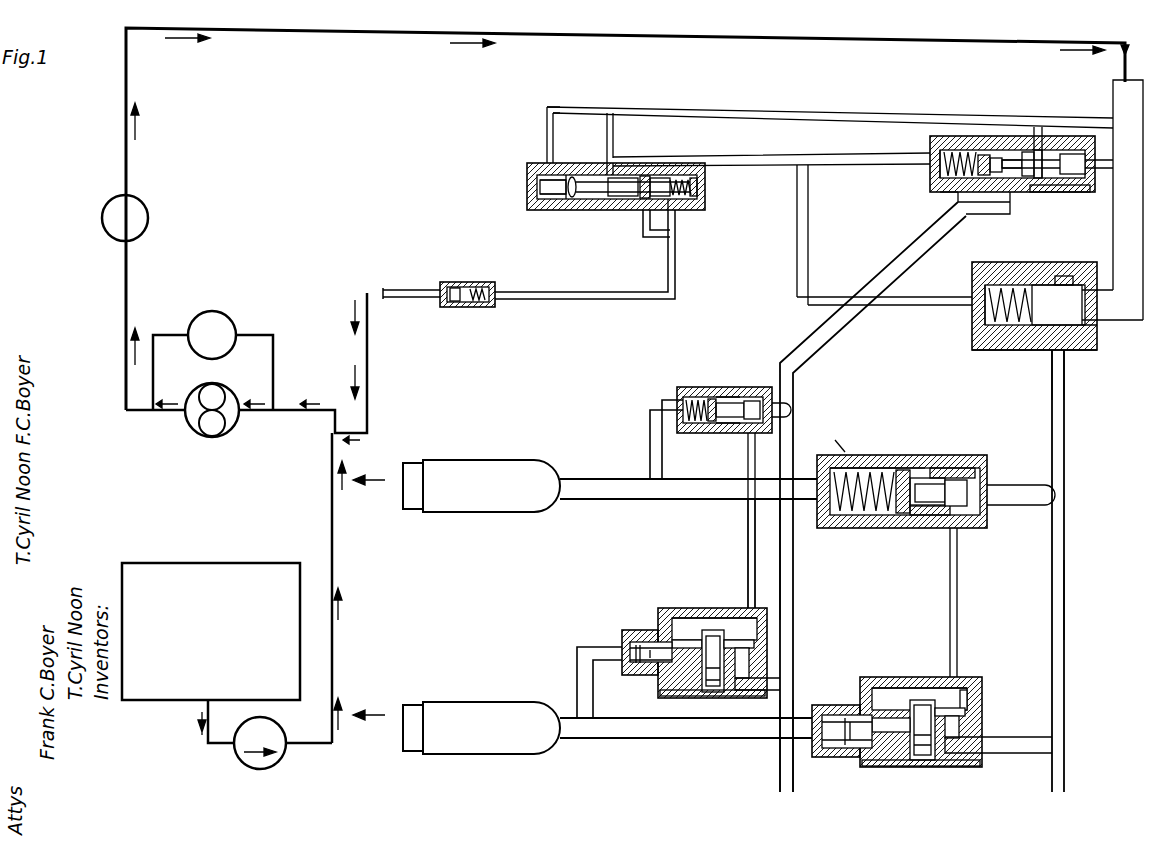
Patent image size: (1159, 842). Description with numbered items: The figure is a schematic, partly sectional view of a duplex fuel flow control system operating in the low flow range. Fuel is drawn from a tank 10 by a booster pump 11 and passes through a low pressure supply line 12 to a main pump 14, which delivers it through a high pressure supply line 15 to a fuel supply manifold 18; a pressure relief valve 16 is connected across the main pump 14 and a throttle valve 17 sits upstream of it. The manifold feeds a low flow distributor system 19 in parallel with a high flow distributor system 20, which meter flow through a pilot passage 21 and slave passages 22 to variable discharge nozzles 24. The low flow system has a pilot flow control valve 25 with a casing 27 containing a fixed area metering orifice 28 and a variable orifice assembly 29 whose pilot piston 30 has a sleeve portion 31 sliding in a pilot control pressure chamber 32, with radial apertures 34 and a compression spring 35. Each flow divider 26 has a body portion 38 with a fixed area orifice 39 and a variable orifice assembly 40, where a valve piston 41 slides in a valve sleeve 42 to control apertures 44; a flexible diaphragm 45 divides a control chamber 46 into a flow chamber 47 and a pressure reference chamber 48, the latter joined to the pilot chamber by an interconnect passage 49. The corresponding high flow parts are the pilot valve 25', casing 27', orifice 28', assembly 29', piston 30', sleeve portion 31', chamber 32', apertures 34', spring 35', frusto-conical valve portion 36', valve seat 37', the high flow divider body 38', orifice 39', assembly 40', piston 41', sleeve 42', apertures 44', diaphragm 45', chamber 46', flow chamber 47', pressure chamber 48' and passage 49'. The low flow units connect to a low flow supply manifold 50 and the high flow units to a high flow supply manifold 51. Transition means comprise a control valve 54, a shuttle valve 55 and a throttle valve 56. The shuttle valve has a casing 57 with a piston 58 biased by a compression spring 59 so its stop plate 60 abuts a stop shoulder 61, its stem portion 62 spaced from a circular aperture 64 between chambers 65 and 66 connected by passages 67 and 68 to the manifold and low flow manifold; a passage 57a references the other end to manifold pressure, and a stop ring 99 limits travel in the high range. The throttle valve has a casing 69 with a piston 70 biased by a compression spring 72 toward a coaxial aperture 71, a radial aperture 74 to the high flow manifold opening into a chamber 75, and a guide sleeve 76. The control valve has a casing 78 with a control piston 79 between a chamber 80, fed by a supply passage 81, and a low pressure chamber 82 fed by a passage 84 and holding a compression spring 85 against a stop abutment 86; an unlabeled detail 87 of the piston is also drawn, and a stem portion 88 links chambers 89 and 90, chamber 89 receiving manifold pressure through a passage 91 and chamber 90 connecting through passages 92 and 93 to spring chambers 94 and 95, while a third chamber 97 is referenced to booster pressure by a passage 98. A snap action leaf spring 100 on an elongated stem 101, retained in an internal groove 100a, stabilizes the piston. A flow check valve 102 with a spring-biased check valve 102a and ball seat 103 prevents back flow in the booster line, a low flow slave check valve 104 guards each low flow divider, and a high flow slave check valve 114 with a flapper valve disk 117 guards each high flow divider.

The tank 10 is at (212, 572).
The booster pump 11 is at (286, 765).
The low pressure supply line 12 is at (342, 552).
The main pump 14 is at (186, 420).
The high pressure supply line 15 is at (128, 280).
The pressure relief valve 16 is at (216, 312).
The throttle valve 17 is at (150, 205).
The fuel supply manifold 18 is at (1140, 196).
The low flow metering or distributor system 19 is at (840, 440).
The high flow metering or distributor system 20 is at (1075, 480).
The pilot passage 21 is at (592, 476).
The slave passages 22 is at (566, 700).
The variable discharge nozzles 24 is at (492, 470).
The pilot flow control valve 25 is at (737, 471).
The pilot flow control valve 25' is at (936, 527).
The flow divider 26 is at (718, 710).
The body or casing 27 is at (676, 384).
The body or casing 27' is at (911, 462).
The fixed area metering orifice 28 is at (799, 402).
The fixed area metering orifice 28' is at (1020, 473).
The variable orifice assembly 29 is at (730, 434).
The variable orifice assembly 29' is at (915, 446).
The pilot plunger or piston 30 is at (710, 377).
The pilot plunger or piston 30' is at (880, 515).
The sleeve portion 31 is at (730, 388).
The sleeve portion 31' is at (952, 446).
The pilot control pressure chamber or passage 32 is at (786, 391).
The pilot control pressure chamber or passage 32' is at (979, 520).
The radial apertures 34 is at (738, 520).
The radial apertures 34' is at (922, 465).
The compression spring 35 is at (671, 439).
The compression spring 35' is at (861, 445).
The frusto-conical valve portion 36' is at (925, 522).
The frusto-conical valve seat 37' is at (908, 438).
The body portion 38 is at (696, 731).
The body portion 38' is at (921, 781).
The fixed area orifice 39 is at (783, 674).
The fixed area orifice 39' is at (998, 755).
The variable orifice assembly 40 is at (711, 627).
The variable orifice assembly 40' is at (917, 702).
The pressure balanced valve plunger or piston 41 is at (694, 632).
The pressure balanced valve plunger or piston 41' is at (946, 749).
The valve sleeve 42 is at (653, 625).
The valve sleeve 42' is at (880, 756).
The apertures 44 is at (715, 667).
The apertures 44' is at (919, 666).
The flexible diaphragm 45 is at (681, 597).
The flexible diaphragm 45' is at (934, 661).
The control chamber 46 is at (778, 633).
The control chamber 46' is at (983, 700).
The flow chamber 47 is at (783, 658).
The flow chamber 47' is at (984, 721).
The pressure reference chamber 48 is at (714, 606).
The pressure reference chamber 48' is at (993, 680).
The interconnect passage 49 is at (721, 553).
The interconnect passage 49' is at (982, 602).
The low flow fluid supply manifold 50 is at (793, 566).
The high flow fluid supply manifold 51 is at (1066, 600).
The control valve 54 is at (718, 202).
The shuttle valve 55 is at (1060, 206).
The throttle valve 56 is at (1065, 365).
The casing 57 is at (1085, 140).
The passage 57a is at (1090, 180).
The plunger or piston 58 is at (1050, 178).
The compression spring 59 is at (948, 150).
The stop plate 60 is at (978, 180).
The stop shoulder 61 is at (992, 180).
The reduced diameter central stem portion 62 is at (1010, 180).
The circular aperture 64 is at (1025, 148).
The chamber 65 is at (1042, 135).
The chamber 66 is at (1030, 150).
The passage 67 is at (1075, 115).
The passage 68 is at (808, 250).
The casing 69 is at (978, 348).
The plunger or piston 70 is at (1080, 350).
The coaxial aperture 71 is at (1085, 312).
The compression spring 72 is at (985, 300).
The radial aperture 74 is at (1075, 398).
The chamber 75 is at (1050, 360).
The guide sleeve 76 is at (1066, 285).
The casing 78 is at (700, 186).
The control plunger or piston 79 is at (598, 200).
The coaxial chamber 80 is at (540, 190).
The supply passage 81 is at (547, 130).
The chamber 82 is at (680, 200).
The passage 84 is at (680, 282).
The compression spring 85 is at (690, 176).
The stop abutment 86 is at (592, 150).
The piston 87 is at (672, 176).
The reduced diameter central stem portion 88 is at (622, 200).
The coaxial chamber 89 is at (570, 176).
The coaxial chamber 90 is at (626, 176).
The passage 91 is at (610, 110).
The passage 92 is at (892, 156).
The passage 93 is at (885, 310).
The chamber 94 is at (960, 192).
The chamber 95 is at (990, 280).
The third coaxial chamber 97 is at (652, 178).
The passage 98 is at (662, 245).
The stop ring 99 is at (942, 174).
The snap action leaf spring 100 is at (540, 183).
The internal groove 100a is at (540, 196).
The elongated stem 101 is at (566, 200).
The flow check valve 102 is at (448, 308).
The spring-biased check valve 102a is at (492, 305).
The ball seat 103 is at (488, 290).
The low flow slave check valve 104 is at (640, 676).
The high flow slave check valve 114 is at (838, 692).
The flapper valve disk 117 is at (793, 745).